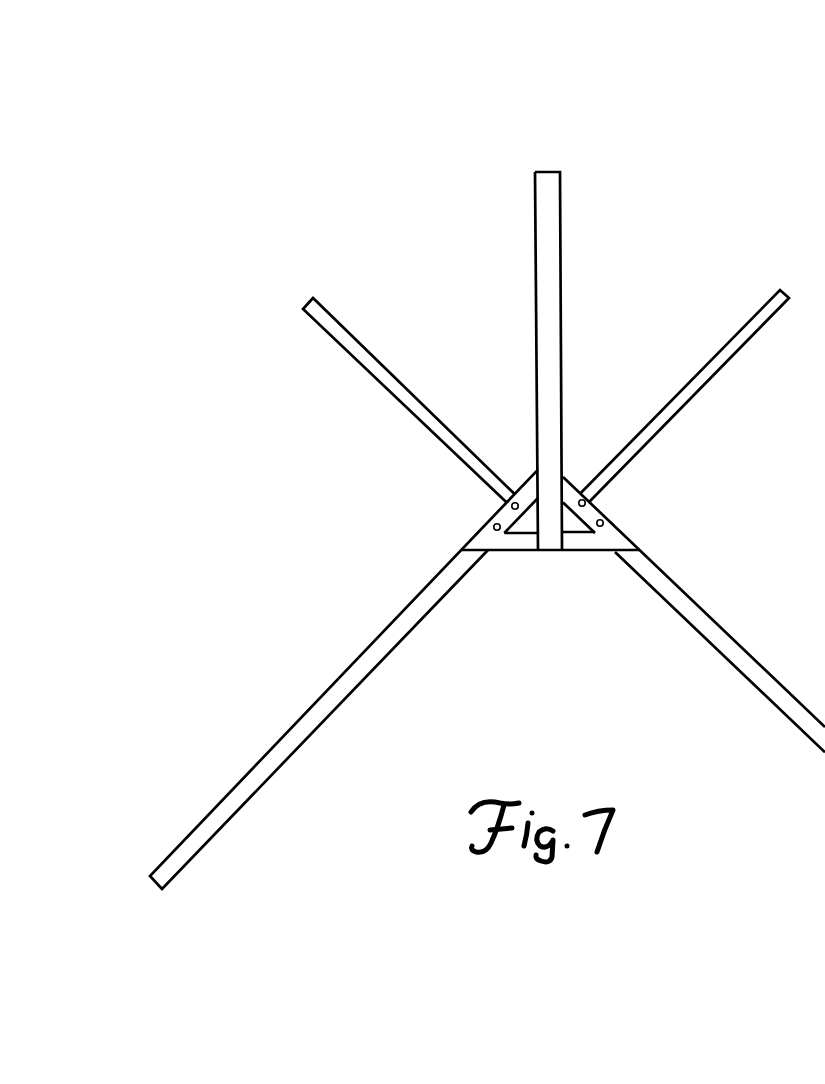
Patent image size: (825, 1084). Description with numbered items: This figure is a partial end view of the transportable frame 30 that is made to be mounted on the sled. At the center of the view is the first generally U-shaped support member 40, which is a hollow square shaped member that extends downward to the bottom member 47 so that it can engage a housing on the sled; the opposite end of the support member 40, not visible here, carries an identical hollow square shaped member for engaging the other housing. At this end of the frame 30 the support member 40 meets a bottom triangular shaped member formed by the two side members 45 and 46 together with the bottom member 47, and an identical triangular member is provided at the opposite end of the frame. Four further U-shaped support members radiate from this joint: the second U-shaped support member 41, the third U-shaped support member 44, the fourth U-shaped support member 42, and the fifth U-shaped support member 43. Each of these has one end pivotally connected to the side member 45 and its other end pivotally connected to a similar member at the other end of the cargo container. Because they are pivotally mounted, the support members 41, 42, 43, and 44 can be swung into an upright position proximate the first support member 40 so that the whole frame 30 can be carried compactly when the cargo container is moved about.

The transportable frame 30 is at (603, 189).
The first generally U-shaped support member 40 is at (556, 296).
The second U-shaped support member 41 is at (722, 362).
The fourth U-shaped support member 42 is at (685, 604).
The fifth U-shaped support member 43 is at (360, 664).
The third U-shaped support member 44 is at (362, 357).
The side member 45 is at (607, 532).
The side member 46 is at (498, 513).
The bottom member 47 is at (512, 543).